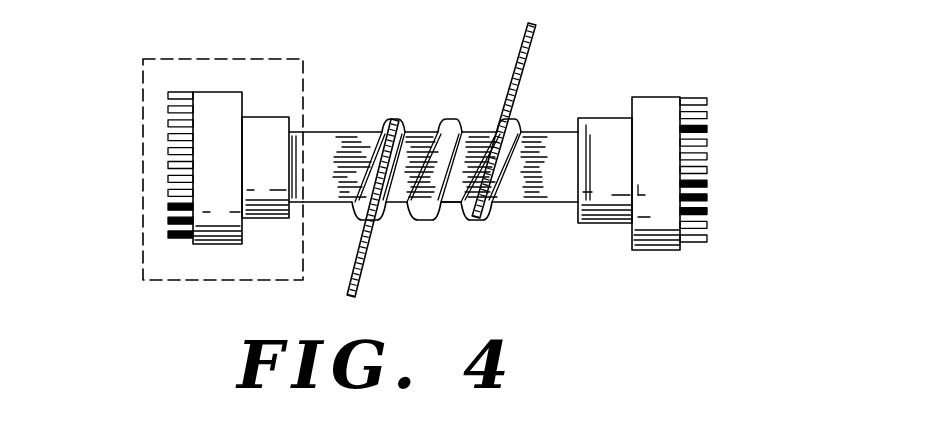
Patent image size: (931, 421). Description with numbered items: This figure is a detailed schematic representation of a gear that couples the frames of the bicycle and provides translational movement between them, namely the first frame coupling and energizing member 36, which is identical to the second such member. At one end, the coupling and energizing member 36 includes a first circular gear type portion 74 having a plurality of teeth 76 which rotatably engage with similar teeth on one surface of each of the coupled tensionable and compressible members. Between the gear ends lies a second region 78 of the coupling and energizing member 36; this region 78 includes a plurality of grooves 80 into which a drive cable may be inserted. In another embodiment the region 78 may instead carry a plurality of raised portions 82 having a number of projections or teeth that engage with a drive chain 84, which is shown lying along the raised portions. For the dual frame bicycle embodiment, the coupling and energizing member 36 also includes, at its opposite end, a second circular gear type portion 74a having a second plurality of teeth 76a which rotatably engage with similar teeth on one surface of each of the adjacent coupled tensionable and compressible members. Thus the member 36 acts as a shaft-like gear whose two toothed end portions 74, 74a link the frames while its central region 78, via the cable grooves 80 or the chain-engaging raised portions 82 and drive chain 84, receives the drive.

The first frame coupling and energizing member 36 is at (467, 171).
The first circular gear type portion 74 is at (706, 146).
The second circular gear type portion 74a is at (185, 134).
The teeth 76 is at (707, 112).
The second plurality of teeth 76a is at (168, 130).
The second region 78 is at (445, 205).
The grooves 80 is at (483, 133).
The raised portions 82 is at (450, 117).
The drive chain 84 is at (522, 53).